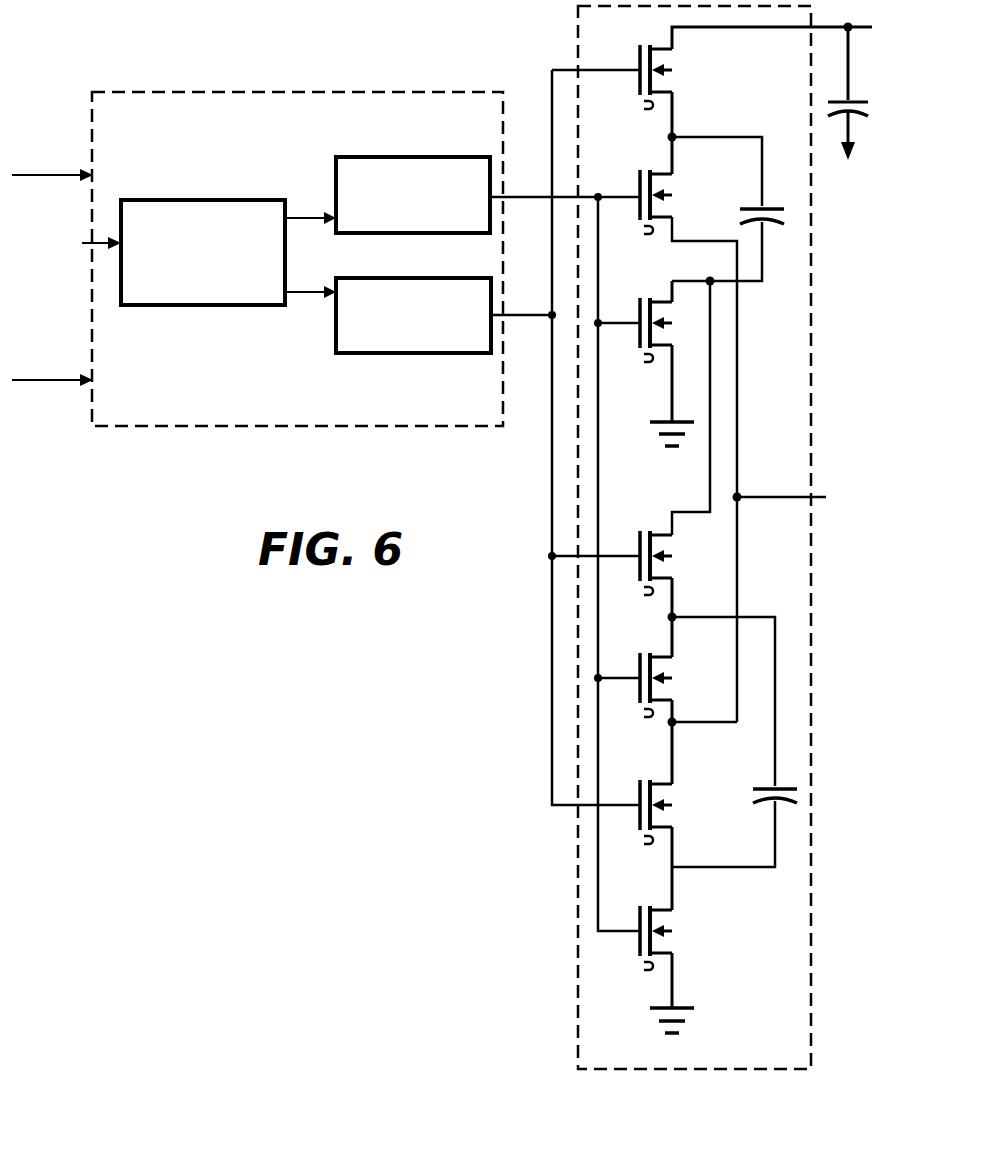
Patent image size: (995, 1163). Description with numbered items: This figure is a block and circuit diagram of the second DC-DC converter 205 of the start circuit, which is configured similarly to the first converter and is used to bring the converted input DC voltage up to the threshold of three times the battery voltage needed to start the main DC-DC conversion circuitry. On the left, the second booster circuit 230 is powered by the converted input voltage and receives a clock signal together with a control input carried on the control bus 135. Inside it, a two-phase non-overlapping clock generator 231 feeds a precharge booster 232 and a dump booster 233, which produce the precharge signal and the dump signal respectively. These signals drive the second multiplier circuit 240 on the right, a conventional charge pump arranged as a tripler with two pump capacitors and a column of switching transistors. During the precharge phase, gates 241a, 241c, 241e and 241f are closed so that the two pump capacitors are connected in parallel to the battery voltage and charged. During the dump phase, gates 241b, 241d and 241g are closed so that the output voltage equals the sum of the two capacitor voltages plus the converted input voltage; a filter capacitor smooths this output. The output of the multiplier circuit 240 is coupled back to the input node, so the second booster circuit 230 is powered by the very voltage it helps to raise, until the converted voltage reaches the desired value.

The second DC-DC converter 205 is at (123, 33).
The second booster circuit 230 is at (106, 140).
The two-phase non-overlapping clock generator 231 is at (178, 200).
The precharge booster 232 is at (360, 157).
The dump booster 233 is at (355, 353).
The control bus 135 is at (62, 384).
The second VIND Multiplier-2 circuit 240 is at (800, 82).
The gate 241a is at (638, 947).
The gate 241b is at (638, 824).
The gate 241c is at (638, 697).
The gate 241d is at (638, 574).
The gate 241e is at (638, 342).
The gate 241f is at (638, 214).
The gate 241g is at (638, 90).